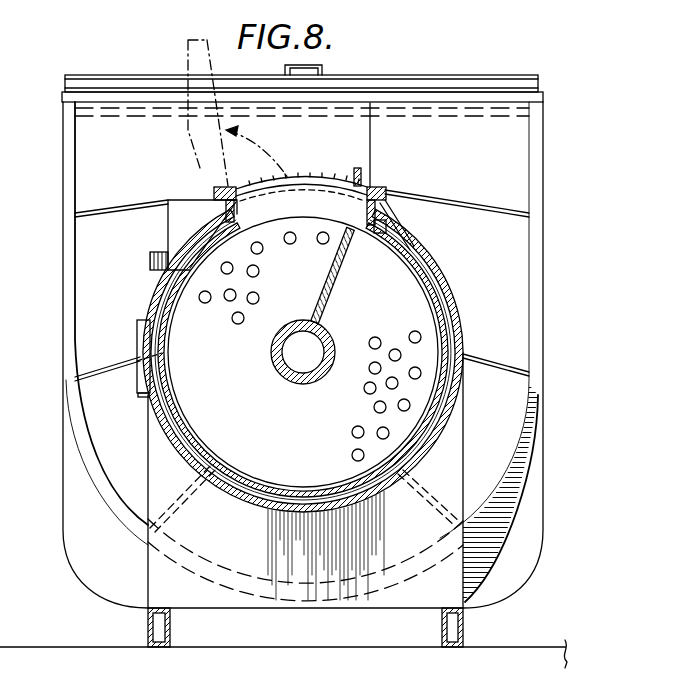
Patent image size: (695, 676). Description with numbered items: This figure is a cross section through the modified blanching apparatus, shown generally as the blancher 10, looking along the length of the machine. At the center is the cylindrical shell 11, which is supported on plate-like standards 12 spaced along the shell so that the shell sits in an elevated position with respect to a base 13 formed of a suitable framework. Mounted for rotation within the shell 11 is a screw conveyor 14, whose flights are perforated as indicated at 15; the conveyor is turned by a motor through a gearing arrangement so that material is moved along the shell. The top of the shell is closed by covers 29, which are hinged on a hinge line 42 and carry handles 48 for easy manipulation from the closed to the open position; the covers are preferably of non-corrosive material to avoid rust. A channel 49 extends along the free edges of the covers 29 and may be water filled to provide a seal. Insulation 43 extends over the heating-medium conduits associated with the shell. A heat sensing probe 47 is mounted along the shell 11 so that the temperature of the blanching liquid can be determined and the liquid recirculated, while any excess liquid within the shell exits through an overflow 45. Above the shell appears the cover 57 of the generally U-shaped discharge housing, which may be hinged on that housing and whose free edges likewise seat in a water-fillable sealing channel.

The blancher 10 is at (555, 179).
The cylindrical shell 11 is at (420, 308).
The plate-like standards 12 is at (533, 508).
The base 13 is at (147, 631).
The screw conveyor 14 is at (300, 383).
The perforated flights 15 is at (392, 278).
The covers 29 is at (329, 177).
The hinge line 42 is at (222, 192).
The insulation 43 is at (456, 346).
The overflow 45 is at (150, 257).
The heat sensing probe 47 is at (140, 337).
The handles 48 is at (357, 168).
The channel 49 is at (385, 193).
The cover 57 is at (419, 83).